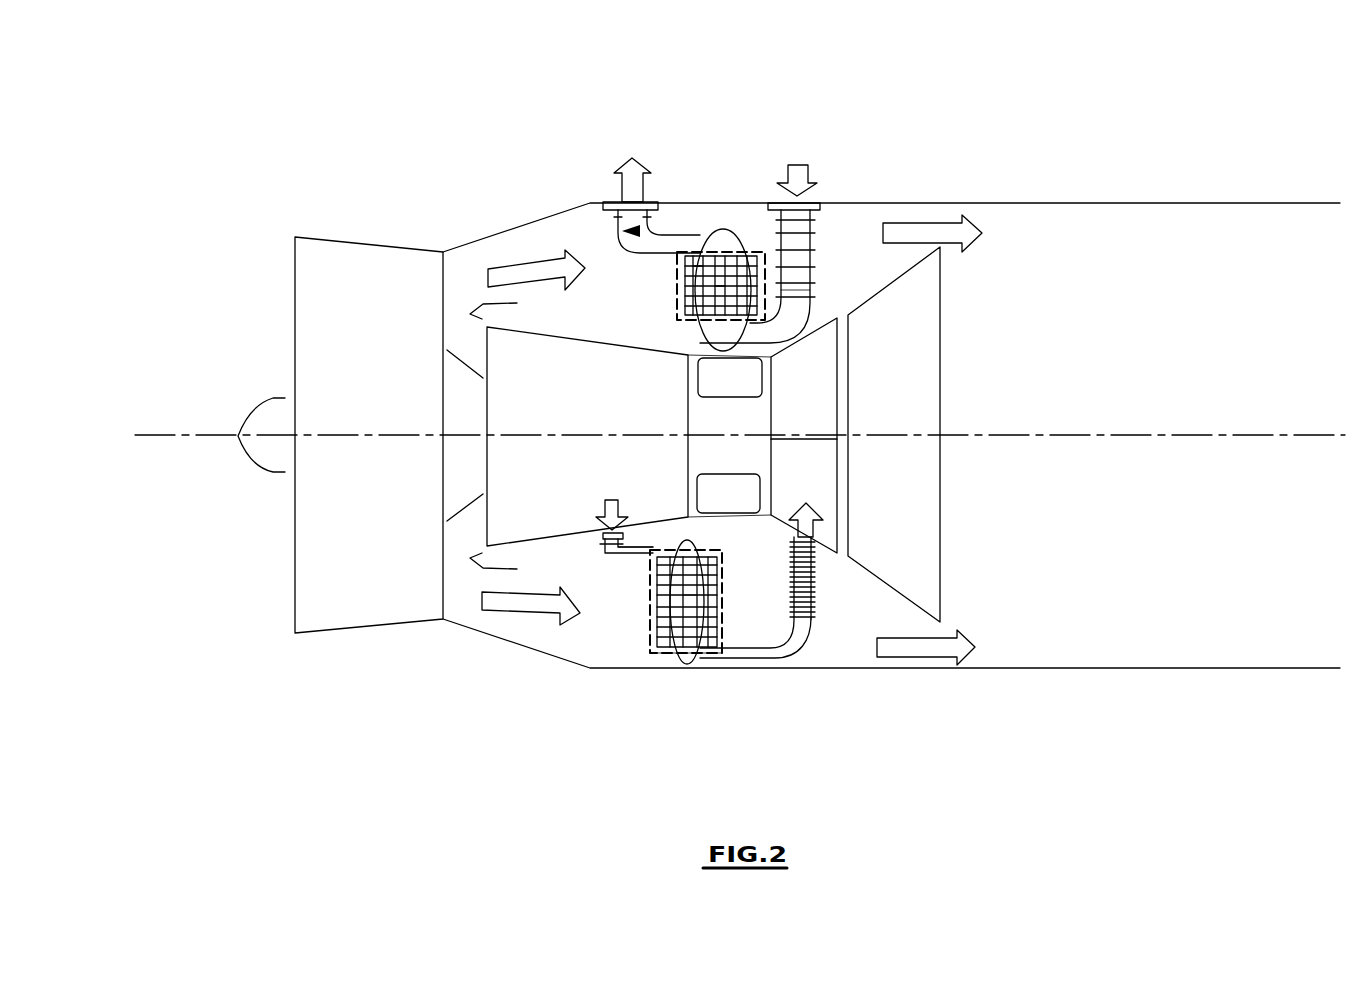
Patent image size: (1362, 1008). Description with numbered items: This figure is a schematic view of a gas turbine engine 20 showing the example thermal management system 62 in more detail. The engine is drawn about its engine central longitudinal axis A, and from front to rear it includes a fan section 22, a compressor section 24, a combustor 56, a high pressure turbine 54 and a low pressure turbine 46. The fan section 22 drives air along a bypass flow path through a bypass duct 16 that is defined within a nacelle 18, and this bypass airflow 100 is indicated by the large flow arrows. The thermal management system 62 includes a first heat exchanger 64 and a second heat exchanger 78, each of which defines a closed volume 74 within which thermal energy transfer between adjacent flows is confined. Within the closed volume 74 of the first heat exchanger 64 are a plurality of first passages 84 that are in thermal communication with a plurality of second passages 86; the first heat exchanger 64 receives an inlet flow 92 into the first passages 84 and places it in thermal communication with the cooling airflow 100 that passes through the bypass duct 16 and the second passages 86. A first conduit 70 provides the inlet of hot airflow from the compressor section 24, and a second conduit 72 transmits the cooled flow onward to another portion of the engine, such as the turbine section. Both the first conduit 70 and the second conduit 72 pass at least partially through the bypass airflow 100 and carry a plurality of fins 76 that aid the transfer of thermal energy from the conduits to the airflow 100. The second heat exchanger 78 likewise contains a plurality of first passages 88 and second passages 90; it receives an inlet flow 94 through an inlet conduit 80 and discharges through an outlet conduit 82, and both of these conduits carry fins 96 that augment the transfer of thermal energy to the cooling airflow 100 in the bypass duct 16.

The engine central longitudinal axis A is at (1268, 435).
The bypass duct 16 is at (875, 618).
The nacelle 18 is at (1060, 668).
The gas turbine engine 20 is at (1112, 128).
The fan section 22 is at (328, 574).
The compressor section 24 is at (536, 497).
The low pressure turbine 46 is at (915, 547).
The high pressure turbine 54 is at (815, 478).
The combustor 56 is at (748, 497).
The thermal management system 62 is at (777, 690).
The first heat exchanger 64 is at (650, 633).
The first conduit 70 is at (611, 560).
The second conduit 72 is at (821, 613).
The defined volume 74 is at (732, 252).
The fins 76 is at (668, 537).
The second heat exchanger 78 is at (762, 284).
The inlet conduit 80 is at (814, 228).
The outlet conduit 82 is at (620, 235).
The first passages 84 is at (670, 611).
The second passages 86 is at (690, 633).
The first passages 88 is at (687, 273).
The second passages 90 is at (700, 286).
The inlet flow 92 is at (609, 500).
The inlet flow 94 is at (795, 167).
The fins 96 is at (808, 306).
The bypass airflow 100 is at (527, 270).